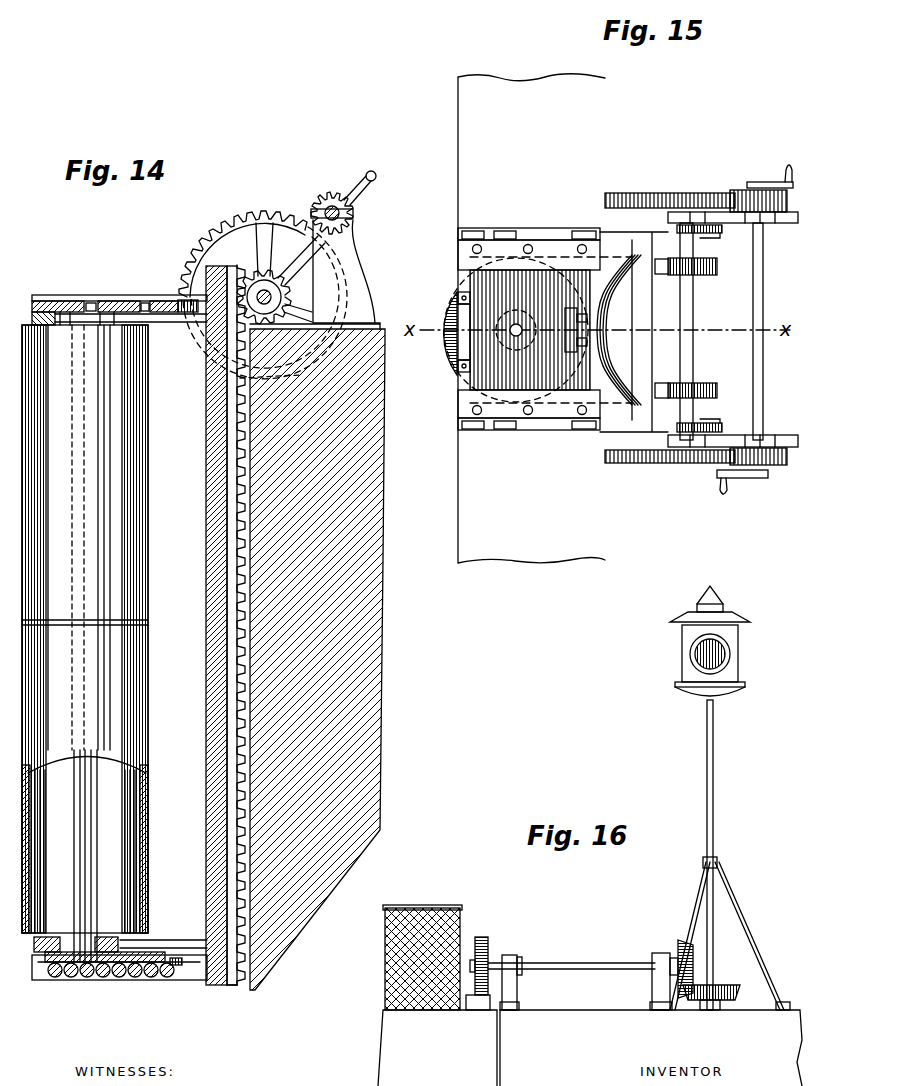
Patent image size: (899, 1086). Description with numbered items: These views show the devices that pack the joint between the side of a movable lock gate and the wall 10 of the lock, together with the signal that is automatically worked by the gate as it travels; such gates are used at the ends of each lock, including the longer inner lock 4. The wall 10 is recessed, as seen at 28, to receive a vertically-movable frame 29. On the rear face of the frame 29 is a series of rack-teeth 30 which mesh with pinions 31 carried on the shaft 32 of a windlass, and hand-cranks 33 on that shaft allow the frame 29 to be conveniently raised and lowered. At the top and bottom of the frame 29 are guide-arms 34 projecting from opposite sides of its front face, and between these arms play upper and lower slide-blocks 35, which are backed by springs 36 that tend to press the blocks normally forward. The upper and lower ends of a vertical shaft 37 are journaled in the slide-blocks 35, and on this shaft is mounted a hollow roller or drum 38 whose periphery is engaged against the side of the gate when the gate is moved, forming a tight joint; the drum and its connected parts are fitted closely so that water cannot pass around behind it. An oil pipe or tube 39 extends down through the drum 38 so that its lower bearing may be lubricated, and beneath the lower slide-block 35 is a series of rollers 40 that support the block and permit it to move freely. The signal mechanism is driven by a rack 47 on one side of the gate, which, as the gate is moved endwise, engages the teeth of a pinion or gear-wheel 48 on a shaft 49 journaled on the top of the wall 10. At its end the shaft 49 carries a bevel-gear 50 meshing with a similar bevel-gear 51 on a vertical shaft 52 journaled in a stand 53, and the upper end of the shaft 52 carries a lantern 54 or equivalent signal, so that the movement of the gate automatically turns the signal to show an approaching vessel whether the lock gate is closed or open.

In FIG. 16, the inner lock 4 is at (422, 985).
In FIG. 14, the wall of the lock 10 is at (360, 688).
In FIG. 15, the wall of the lock 10 is at (534, 318).
In FIG. 16, the wall of the lock 10 is at (590, 1048).
In FIG. 14, the recess 28 is at (247, 663).
In FIG. 15, the recess 28 is at (694, 318).
In FIG. 14, the vertically-movable frame 29 is at (212, 583).
In FIG. 15, the vertically-movable frame 29 is at (655, 350).
In FIG. 14, the rack-teeth 30 is at (236, 563).
In FIG. 15, the rack-teeth 30 is at (662, 383).
In FIG. 14, the pinions 31 is at (290, 292).
In FIG. 15, the pinions 31 is at (718, 390).
In FIG. 14, the shaft 32 is at (292, 297).
In FIG. 15, the shaft 32 is at (695, 420).
In FIG. 14, the hand-cranks 33 is at (378, 176).
In FIG. 15, the hand-cranks 33 is at (733, 480).
In FIG. 14, the guide-arms 34 is at (193, 950).
In FIG. 15, the guide-arms 34 is at (586, 400).
In FIG. 14, the slide-blocks 35 is at (113, 981).
In FIG. 15, the slide-blocks 35 is at (506, 283).
In FIG. 14, the springs 36 is at (180, 964).
In FIG. 15, the springs 36 is at (604, 330).
In FIG. 14, the vertical shaft 37 is at (96, 812).
In FIG. 14, the hollow roller or drum 38 is at (85, 629).
In FIG. 15, the hollow roller or drum 38 is at (452, 340).
In FIG. 14, the oil pipe or tube 39 is at (80, 877).
In FIG. 14, the rollers 40 is at (86, 980).
In FIG. 16, the rack 47 is at (480, 1004).
In FIG. 16, the pinion or gear-wheel 48 is at (489, 946).
In FIG. 16, the shaft 49 is at (615, 964).
In FIG. 16, the bevel-gear 50 is at (693, 966).
In FIG. 16, the bevel-gear 51 is at (735, 988).
In FIG. 16, the vertical shaft 52 is at (714, 763).
In FIG. 16, the stand 53 is at (717, 862).
In FIG. 16, the lantern 54 is at (730, 652).